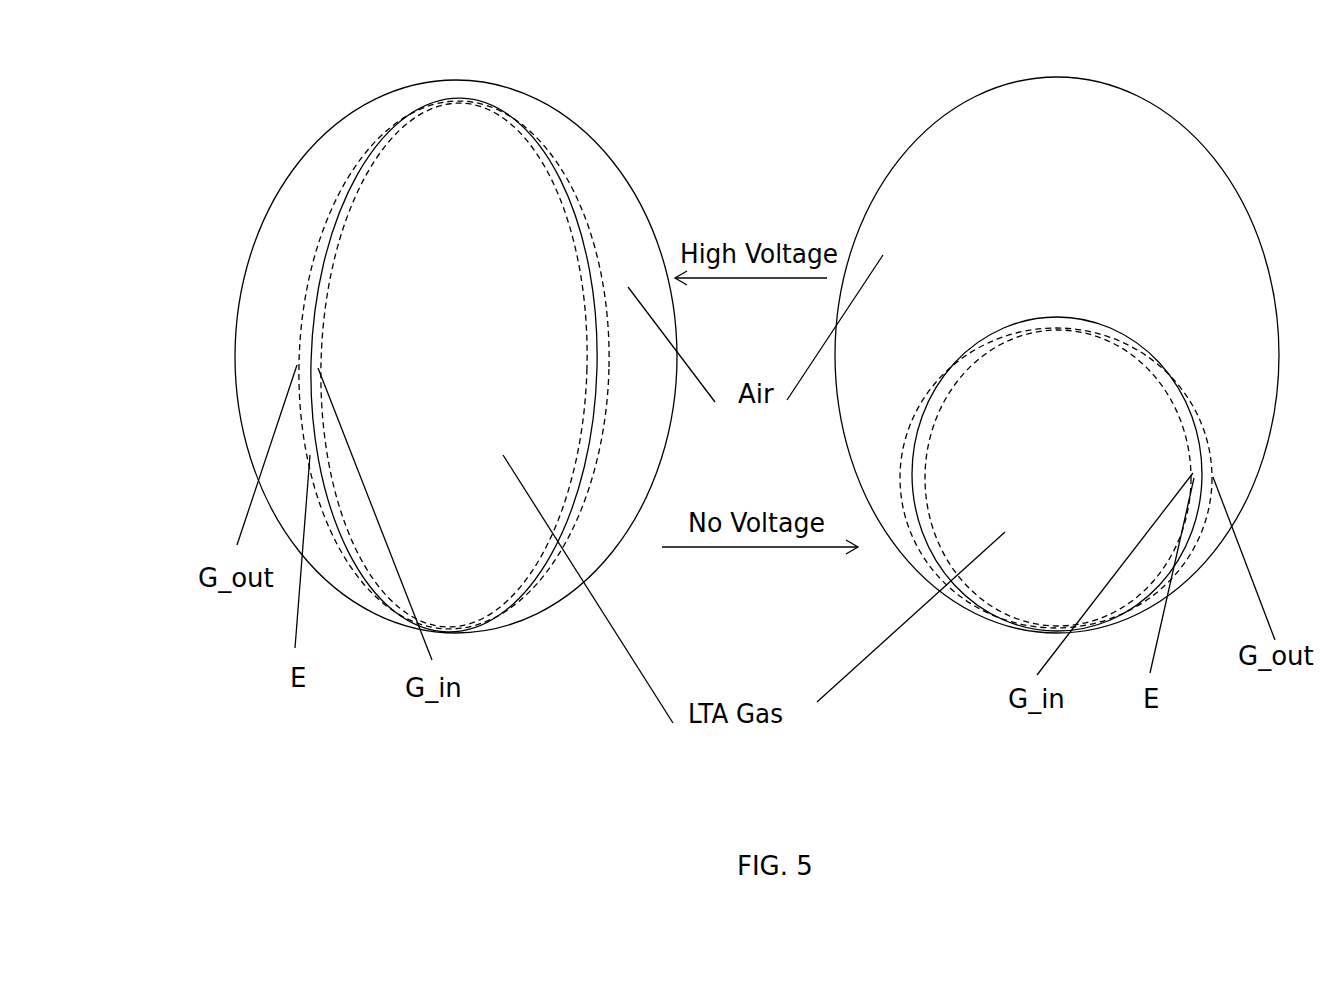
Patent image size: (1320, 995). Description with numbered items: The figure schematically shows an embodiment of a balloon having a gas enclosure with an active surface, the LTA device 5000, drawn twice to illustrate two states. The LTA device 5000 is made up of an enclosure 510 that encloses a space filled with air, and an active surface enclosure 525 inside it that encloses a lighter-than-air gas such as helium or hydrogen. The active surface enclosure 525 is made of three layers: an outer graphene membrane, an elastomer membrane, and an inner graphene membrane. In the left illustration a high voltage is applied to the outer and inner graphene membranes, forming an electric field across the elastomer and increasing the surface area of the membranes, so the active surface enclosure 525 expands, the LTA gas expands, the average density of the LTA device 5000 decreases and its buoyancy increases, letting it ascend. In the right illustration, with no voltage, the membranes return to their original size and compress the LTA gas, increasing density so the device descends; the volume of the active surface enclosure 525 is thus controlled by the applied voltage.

The enclosure 510 is at (953, 110).
The active surface enclosure 525 is at (995, 625).
The LTA device 5000 is at (757, 443).